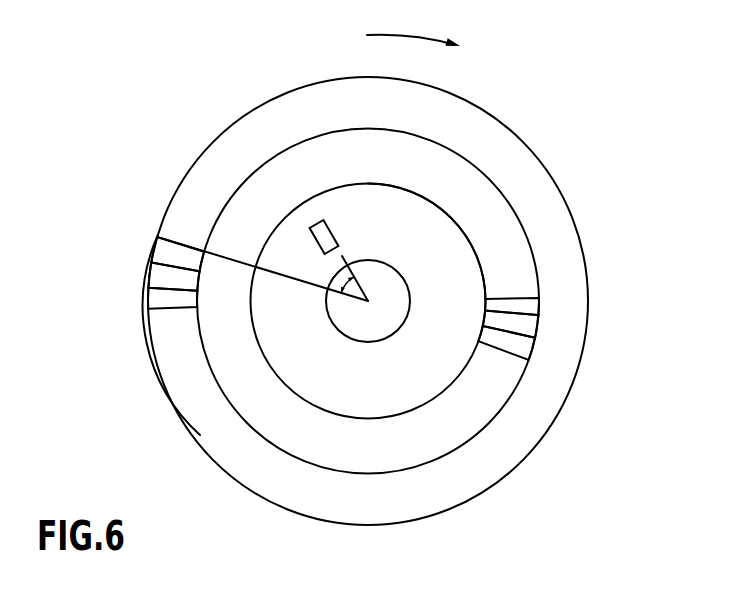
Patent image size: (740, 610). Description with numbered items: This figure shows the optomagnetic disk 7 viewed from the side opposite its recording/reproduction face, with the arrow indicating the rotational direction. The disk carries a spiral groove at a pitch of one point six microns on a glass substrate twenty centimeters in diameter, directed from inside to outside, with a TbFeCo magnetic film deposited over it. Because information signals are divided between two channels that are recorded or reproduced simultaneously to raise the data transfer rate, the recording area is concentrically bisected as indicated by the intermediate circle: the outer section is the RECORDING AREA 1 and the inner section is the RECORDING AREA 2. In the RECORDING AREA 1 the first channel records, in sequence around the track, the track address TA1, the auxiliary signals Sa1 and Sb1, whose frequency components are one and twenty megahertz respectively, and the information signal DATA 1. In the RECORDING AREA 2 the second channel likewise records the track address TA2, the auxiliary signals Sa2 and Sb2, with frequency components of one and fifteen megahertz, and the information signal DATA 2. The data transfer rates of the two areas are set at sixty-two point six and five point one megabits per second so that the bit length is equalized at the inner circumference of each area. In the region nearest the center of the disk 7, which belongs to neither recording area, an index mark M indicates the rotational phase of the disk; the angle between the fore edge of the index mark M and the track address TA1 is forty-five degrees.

The optical disk 7 is at (513, 130).
The recording area 1 RECORDING AREA 1 is at (316, 103).
The recording area 2 RECORDING AREA 2 is at (292, 163).
The information signal DATA1 DATA 1 is at (200, 435).
The information signal DATA2 DATA 2 is at (497, 248).
The track address TA1 is at (162, 247).
The auxiliary signal Sa1 is at (163, 273).
The auxiliary signal Sb1 is at (158, 298).
The track address TA2 is at (518, 352).
The auxiliary signal Sa2 is at (530, 325).
The auxiliary signal Sb2 is at (527, 302).
The index mark M is at (307, 232).